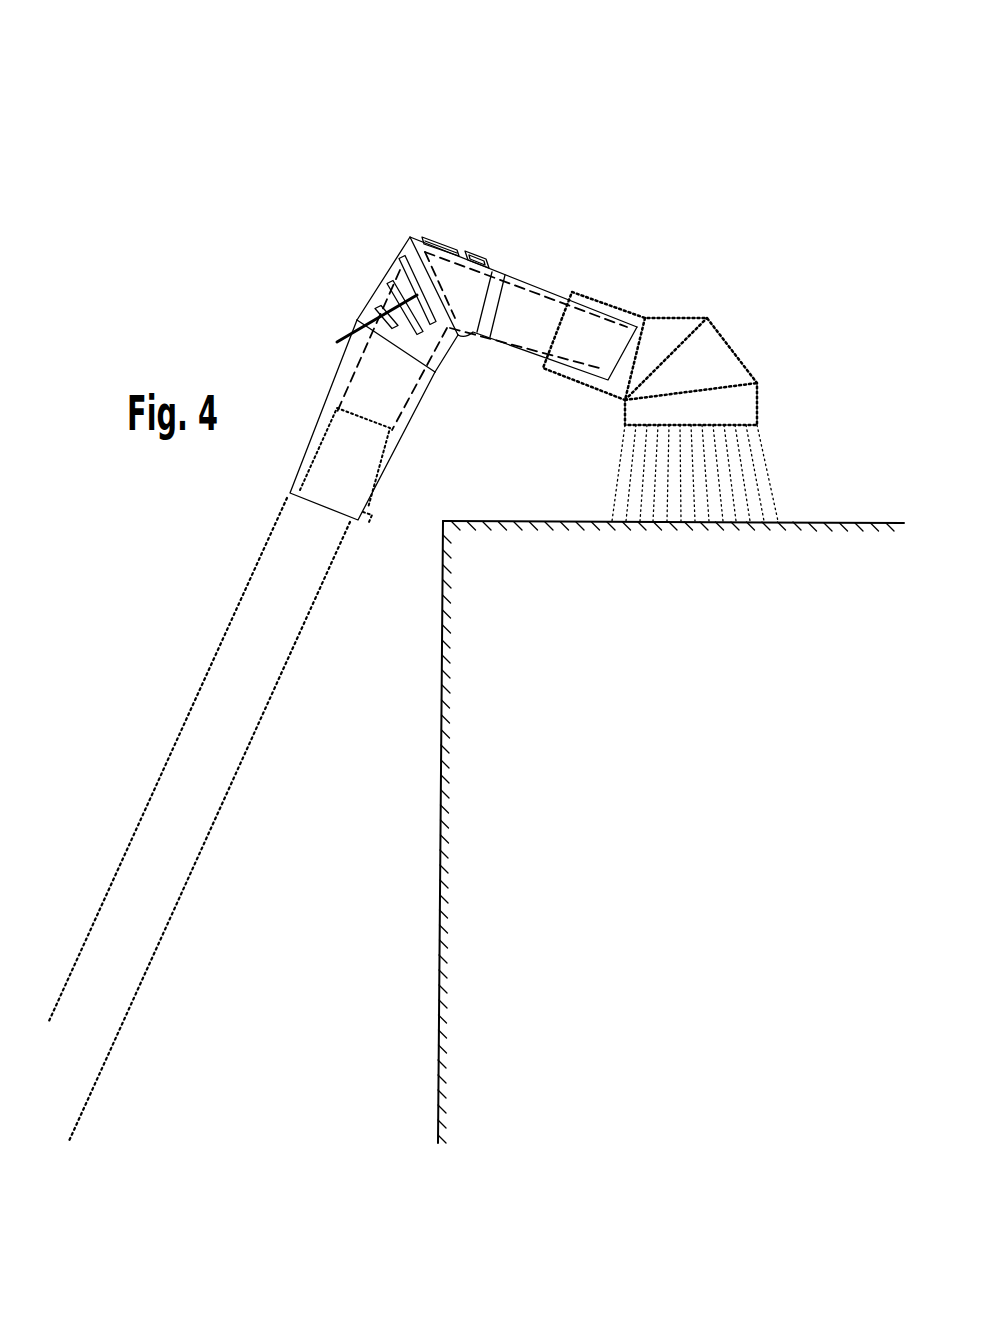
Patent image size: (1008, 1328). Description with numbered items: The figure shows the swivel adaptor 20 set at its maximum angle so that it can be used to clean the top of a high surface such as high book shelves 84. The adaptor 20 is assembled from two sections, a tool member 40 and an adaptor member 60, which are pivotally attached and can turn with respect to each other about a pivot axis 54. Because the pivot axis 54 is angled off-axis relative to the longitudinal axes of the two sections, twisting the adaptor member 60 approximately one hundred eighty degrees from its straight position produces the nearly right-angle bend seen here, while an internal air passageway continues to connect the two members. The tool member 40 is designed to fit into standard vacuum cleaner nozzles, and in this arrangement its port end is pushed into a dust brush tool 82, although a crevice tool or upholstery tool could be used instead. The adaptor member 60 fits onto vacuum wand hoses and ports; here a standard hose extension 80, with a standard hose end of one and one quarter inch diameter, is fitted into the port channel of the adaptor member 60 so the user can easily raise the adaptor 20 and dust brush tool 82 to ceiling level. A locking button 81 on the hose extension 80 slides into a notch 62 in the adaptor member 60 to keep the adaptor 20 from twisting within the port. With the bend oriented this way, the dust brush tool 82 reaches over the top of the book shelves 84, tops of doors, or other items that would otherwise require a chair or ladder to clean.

The swivel adaptor 20 is at (415, 336).
The tool member 40 is at (475, 245).
The pivot axis 54 is at (457, 285).
The adaptor member 60 is at (336, 444).
The notch 62 is at (370, 497).
The standard hose extension 80 is at (228, 633).
The locking button 81 is at (367, 515).
The dust brush tool 82 is at (687, 318).
The high book shelves 84 is at (830, 523).